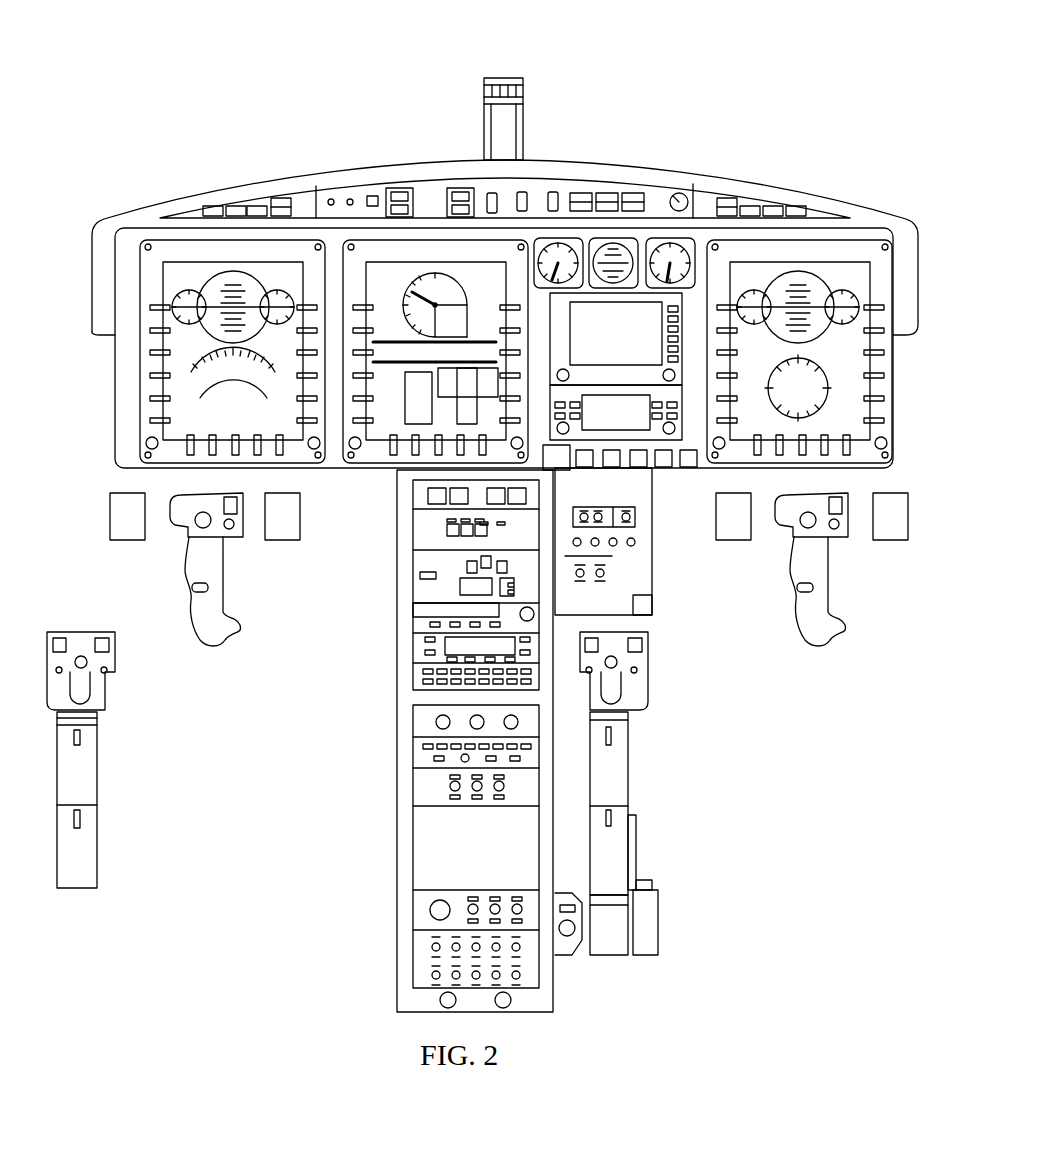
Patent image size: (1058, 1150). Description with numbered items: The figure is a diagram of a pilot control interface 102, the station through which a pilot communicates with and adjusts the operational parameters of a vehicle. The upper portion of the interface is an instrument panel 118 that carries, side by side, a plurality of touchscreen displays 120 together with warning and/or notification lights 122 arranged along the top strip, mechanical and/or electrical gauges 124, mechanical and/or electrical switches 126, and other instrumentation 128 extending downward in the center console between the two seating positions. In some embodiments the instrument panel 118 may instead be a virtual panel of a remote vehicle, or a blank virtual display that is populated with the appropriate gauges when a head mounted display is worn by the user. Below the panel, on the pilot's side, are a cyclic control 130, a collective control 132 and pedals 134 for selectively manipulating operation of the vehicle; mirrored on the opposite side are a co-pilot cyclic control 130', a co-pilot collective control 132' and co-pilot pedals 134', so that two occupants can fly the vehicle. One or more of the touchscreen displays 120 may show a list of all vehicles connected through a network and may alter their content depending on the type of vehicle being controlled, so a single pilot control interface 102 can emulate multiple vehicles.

The pilot control interface 102 is at (380, 72).
The instrument panel 118 is at (897, 408).
The touchscreen displays 120 is at (140, 362).
The warning and/or notification lights 122 is at (213, 207).
The mechanical and/or electrical gauges 124 is at (660, 238).
The mechanical and/or electrical switches 126 is at (522, 192).
The other instrumentation 128 is at (405, 650).
The cyclic control 130 is at (786, 569).
The co-pilot cyclic control 130' is at (206, 597).
The collective control 132 is at (639, 793).
The co-pilot collective control 132' is at (109, 760).
The pedals 134 is at (811, 543).
The co-pilot pedals 134' is at (204, 543).